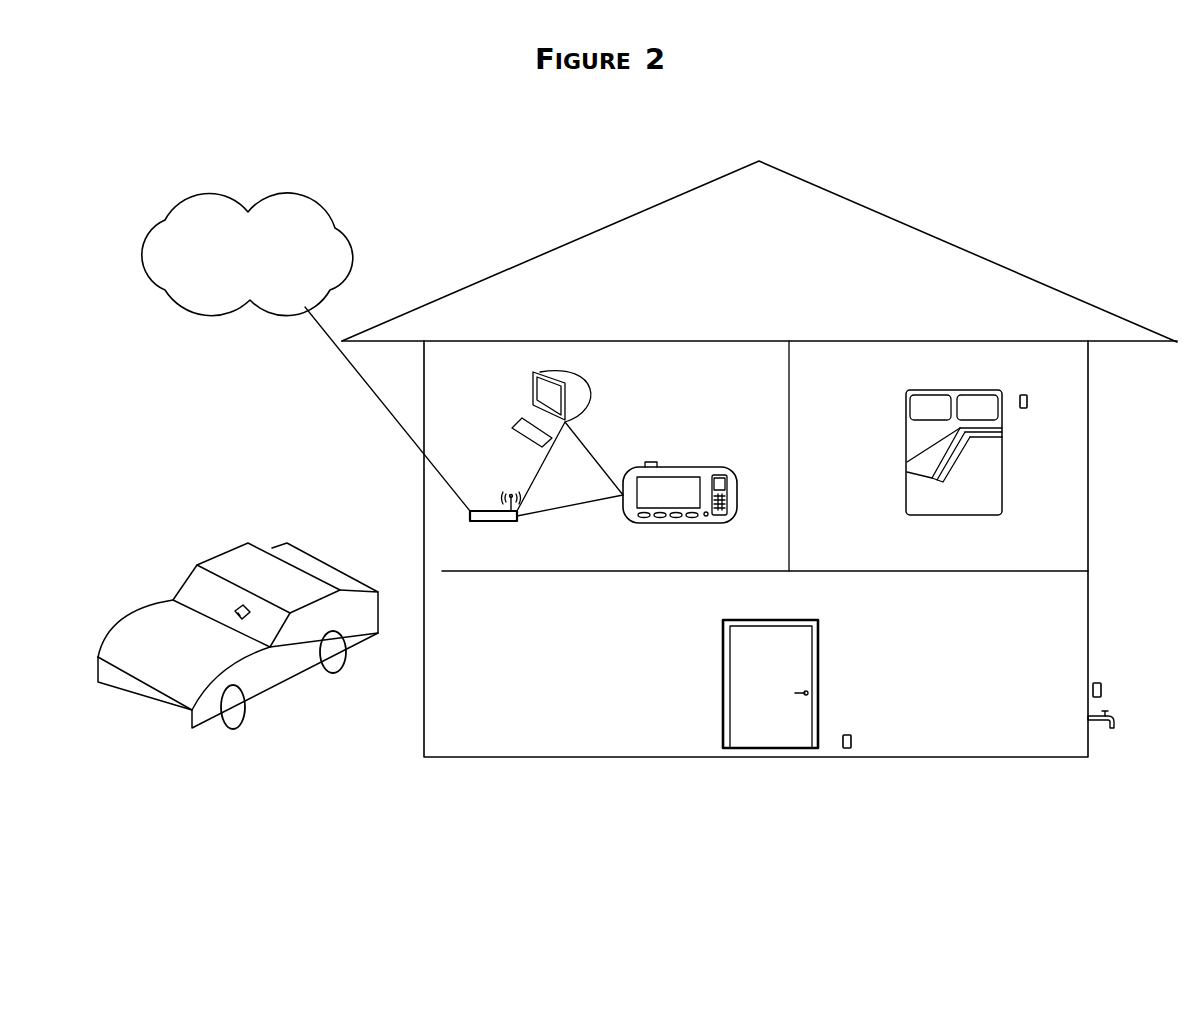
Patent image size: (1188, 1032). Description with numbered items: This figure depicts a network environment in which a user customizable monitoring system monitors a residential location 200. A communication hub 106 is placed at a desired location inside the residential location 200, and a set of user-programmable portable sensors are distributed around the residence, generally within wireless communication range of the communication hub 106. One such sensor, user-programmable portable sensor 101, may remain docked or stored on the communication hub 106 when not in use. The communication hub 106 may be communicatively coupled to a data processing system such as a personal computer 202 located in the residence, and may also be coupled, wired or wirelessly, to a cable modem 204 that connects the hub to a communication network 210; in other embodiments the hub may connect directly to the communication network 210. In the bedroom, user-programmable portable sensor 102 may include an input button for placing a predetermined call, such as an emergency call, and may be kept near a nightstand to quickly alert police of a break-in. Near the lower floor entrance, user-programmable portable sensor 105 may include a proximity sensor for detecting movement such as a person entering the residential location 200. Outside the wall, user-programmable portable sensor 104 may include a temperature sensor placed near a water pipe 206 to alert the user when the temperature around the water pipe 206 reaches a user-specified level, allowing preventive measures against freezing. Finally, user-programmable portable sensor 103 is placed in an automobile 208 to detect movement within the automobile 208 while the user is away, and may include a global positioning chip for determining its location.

The residential location 200 is at (566, 236).
The communication network 210 is at (193, 204).
The personal computer 202 is at (533, 395).
The cable modem 204 is at (495, 509).
The user-programmable portable sensor 101 is at (657, 462).
The communication hub 106 is at (713, 467).
The user-programmable portable sensor 102 is at (1020, 395).
The user-programmable portable sensor 105 is at (862, 730).
The user-programmable portable sensor 104 is at (1103, 685).
The water pipe 206 is at (1107, 726).
The automobile 208 is at (208, 560).
The user-programmable portable sensor 103 is at (238, 609).